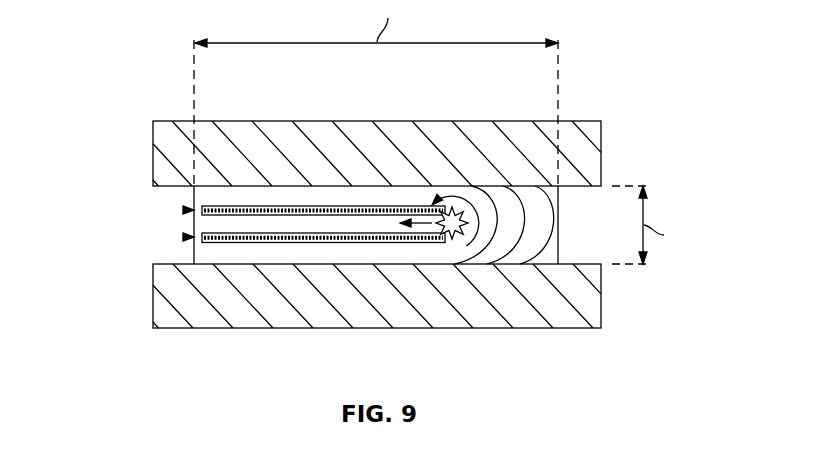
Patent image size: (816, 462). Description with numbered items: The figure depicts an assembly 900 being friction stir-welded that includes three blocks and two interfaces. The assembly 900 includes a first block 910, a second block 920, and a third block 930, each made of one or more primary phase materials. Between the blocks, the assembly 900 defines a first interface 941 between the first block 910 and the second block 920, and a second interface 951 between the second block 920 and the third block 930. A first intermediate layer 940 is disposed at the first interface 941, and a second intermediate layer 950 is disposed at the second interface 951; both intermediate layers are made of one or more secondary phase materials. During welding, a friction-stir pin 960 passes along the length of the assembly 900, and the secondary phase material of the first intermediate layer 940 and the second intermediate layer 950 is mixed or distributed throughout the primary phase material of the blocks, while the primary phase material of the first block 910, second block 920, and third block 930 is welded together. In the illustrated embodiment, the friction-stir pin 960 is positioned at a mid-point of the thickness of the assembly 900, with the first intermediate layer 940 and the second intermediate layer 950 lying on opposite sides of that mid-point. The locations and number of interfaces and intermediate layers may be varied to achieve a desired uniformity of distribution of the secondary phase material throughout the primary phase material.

The assembly 900 is at (379, 184).
The first block 910 is at (192, 197).
The second block 920 is at (193, 223).
The third block 930 is at (190, 254).
The first intermediate layer 940 is at (279, 207).
The first interface 941 is at (184, 210).
The second intermediate layer 950 is at (258, 243).
The second interface 951 is at (184, 237).
The friction-stir pin 960 is at (443, 262).